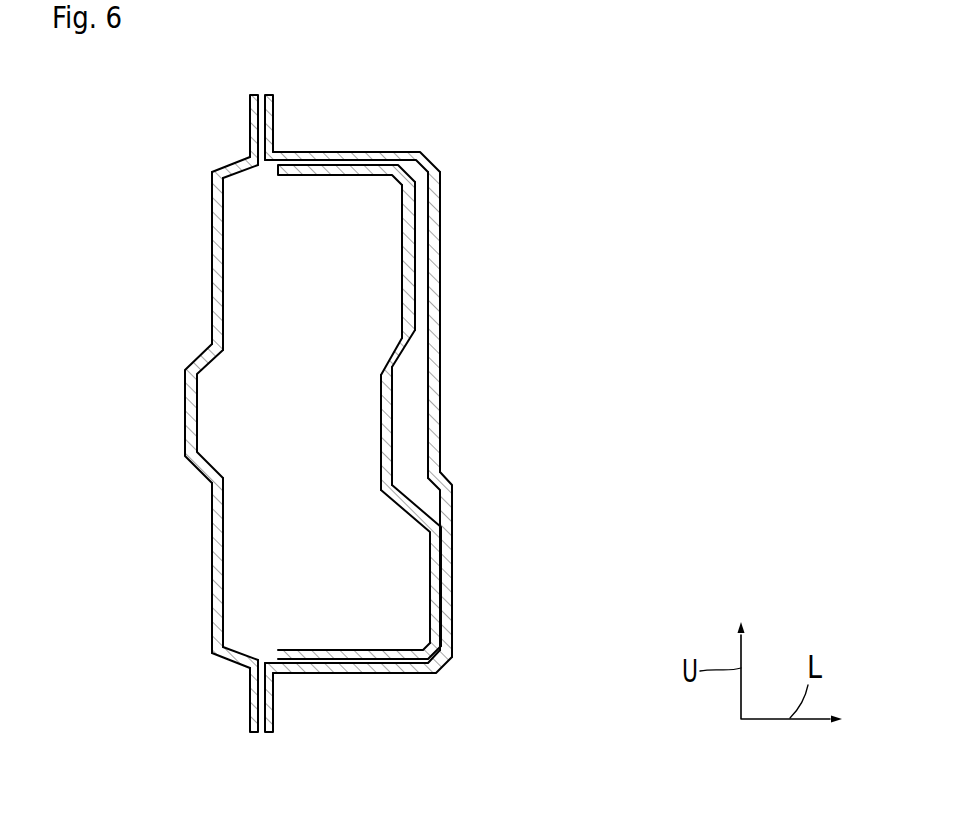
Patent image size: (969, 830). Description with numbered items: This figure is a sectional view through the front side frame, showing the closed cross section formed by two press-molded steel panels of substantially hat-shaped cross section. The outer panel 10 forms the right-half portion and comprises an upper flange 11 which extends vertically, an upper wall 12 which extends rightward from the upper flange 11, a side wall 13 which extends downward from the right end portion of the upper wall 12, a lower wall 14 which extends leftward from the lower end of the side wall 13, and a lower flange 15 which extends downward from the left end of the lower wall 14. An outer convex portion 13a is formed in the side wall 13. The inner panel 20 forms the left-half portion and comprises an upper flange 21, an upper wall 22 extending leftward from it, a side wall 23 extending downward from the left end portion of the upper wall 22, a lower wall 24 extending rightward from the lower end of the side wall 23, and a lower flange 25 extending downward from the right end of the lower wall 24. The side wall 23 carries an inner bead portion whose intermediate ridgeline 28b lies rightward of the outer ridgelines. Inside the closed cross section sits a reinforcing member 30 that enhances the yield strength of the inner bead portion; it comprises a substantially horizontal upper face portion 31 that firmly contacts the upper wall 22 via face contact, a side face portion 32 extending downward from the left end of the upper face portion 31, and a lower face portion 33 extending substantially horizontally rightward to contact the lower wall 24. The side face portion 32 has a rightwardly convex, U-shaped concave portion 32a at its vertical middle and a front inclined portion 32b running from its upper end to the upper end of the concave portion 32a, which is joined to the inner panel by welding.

The outer panel 10 is at (176, 425).
The upper flange 11 is at (250, 120).
The upper wall 12 is at (228, 162).
The side wall 13 is at (207, 270).
The outer convex portion 13a is at (185, 412).
The lower wall 14 is at (228, 664).
The lower flange 15 is at (250, 718).
The inner panel 20 is at (444, 425).
The upper flange 21 is at (273, 120).
The upper wall 22 is at (330, 152).
The side wall 23 is at (526, 414).
The intermediate ridgeline 28b is at (440, 228).
The lower wall 24 is at (381, 675).
The lower flange 25 is at (273, 718).
The reinforcing member 30 is at (412, 412).
The upper face portion 31 is at (286, 178).
The side face portion 32 is at (424, 414).
The concave portion 32a is at (392, 420).
The front inclined portion 32b is at (402, 270).
The lower face portion 33 is at (322, 650).